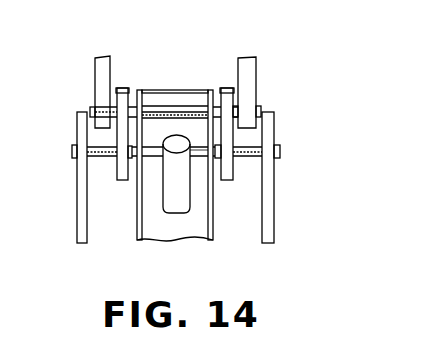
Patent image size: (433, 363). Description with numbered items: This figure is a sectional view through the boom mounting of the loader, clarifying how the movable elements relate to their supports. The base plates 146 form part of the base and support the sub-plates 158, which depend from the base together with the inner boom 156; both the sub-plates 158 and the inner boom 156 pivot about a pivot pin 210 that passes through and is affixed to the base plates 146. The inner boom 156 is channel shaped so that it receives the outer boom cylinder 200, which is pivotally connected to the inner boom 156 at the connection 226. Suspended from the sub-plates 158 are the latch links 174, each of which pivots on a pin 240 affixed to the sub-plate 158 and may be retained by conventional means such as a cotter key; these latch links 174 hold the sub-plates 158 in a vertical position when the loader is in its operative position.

The base plates 146 is at (97, 67).
The inner boom 156 is at (192, 233).
The sub-plates 158 is at (123, 87).
The latch links 174 is at (80, 215).
The outer boom cylinder 200 is at (172, 188).
The pivot pin 210 is at (93, 107).
The pivotal connection of outer boom cylinder 226 is at (198, 155).
The pin 240 is at (73, 147).